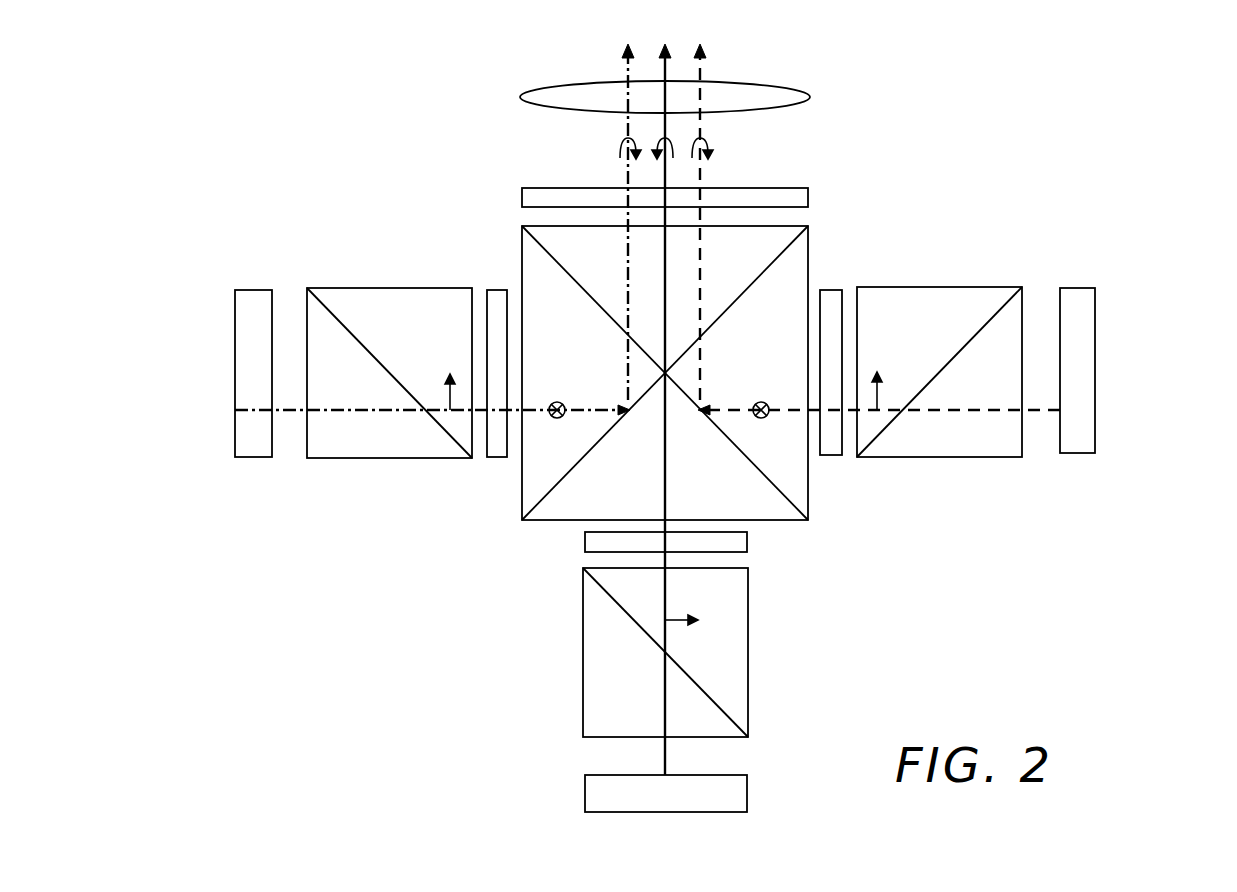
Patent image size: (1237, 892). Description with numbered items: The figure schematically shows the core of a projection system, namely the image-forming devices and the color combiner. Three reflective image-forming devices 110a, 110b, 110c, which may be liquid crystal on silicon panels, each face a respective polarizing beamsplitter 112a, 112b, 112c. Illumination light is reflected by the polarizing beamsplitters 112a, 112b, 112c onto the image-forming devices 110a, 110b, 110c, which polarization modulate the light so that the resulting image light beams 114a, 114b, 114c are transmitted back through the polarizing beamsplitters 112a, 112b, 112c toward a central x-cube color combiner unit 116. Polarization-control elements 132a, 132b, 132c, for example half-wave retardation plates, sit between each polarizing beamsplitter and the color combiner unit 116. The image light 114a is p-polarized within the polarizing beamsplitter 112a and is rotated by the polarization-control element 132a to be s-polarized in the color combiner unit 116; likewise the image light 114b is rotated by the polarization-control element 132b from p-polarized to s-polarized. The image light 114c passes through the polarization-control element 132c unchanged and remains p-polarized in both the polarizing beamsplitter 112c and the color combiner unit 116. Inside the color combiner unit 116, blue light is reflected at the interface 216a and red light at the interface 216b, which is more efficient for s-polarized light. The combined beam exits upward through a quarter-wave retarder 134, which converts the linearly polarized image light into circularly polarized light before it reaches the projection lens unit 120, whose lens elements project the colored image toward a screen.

The projection lens unit 120 is at (545, 90).
The quarter-wave retarder 134 is at (797, 188).
The color combiner unit 116 is at (810, 487).
The interface 216a is at (547, 495).
The interface 216b is at (795, 503).
The polarization-control element 132a is at (500, 290).
The polarization-control element 132b is at (830, 290).
The polarization-control element 132c is at (748, 545).
The polarizing beamsplitter 112a is at (335, 288).
The polarizing beamsplitter 112b is at (957, 287).
The polarizing beamsplitter 112c is at (580, 665).
The image light beam 114a is at (372, 413).
The image light beam 114b is at (935, 412).
The image light beam 114c is at (667, 685).
The image-forming device 110a is at (233, 323).
The image-forming device 110b is at (1092, 350).
The image-forming device 110c is at (673, 813).